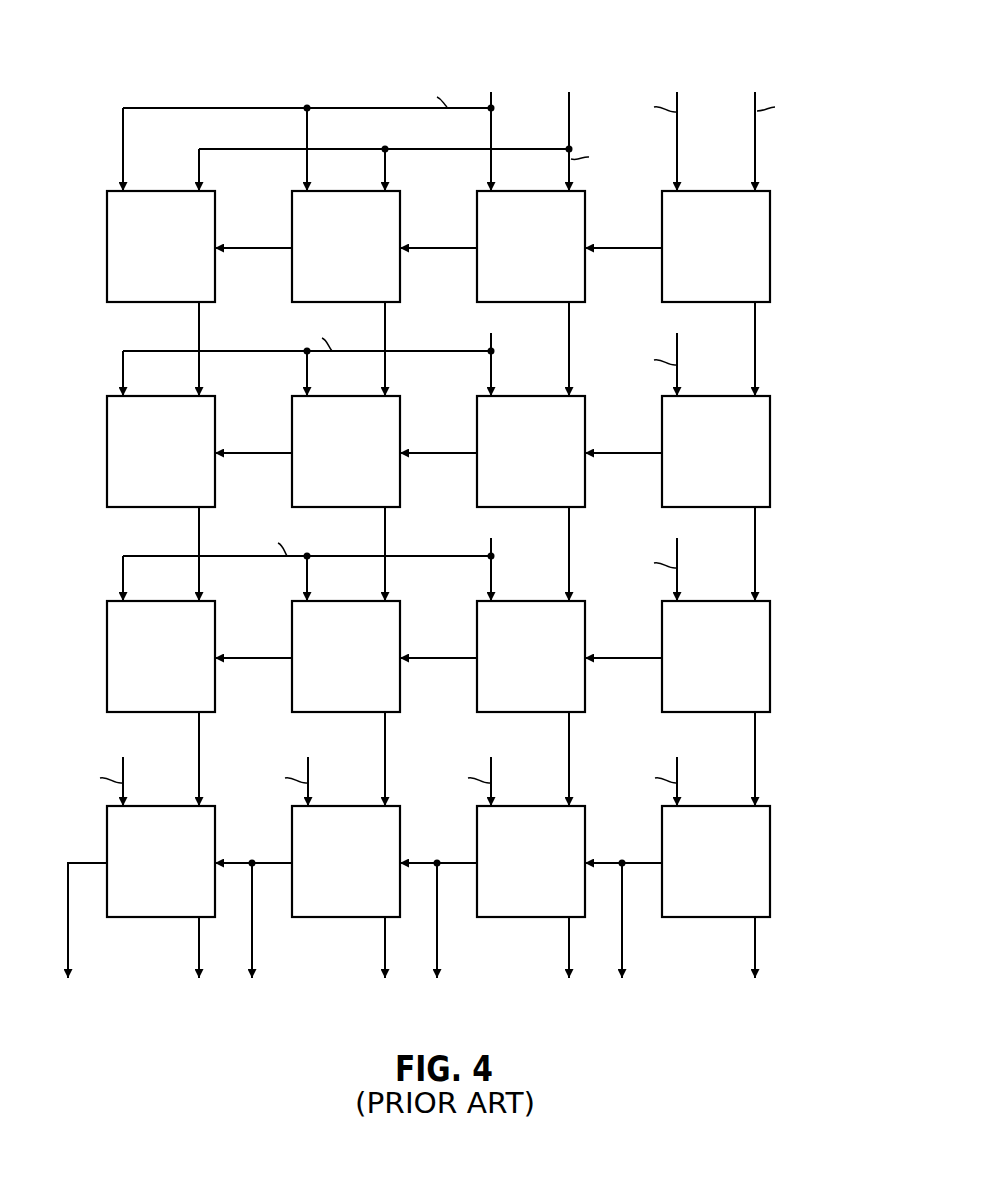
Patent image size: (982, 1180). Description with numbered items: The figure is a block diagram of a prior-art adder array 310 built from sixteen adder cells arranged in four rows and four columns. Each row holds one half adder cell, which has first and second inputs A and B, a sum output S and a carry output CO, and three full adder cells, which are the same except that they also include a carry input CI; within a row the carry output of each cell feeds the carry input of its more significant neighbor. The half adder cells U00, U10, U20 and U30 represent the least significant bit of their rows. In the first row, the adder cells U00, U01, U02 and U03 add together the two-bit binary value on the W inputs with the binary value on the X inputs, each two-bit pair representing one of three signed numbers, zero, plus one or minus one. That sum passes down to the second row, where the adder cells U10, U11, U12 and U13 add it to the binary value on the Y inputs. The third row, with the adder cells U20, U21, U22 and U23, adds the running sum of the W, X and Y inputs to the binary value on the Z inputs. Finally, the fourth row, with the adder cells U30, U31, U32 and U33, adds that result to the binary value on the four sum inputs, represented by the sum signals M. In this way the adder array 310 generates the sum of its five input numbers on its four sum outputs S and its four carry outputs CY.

The adder array 310 is at (150, 30).
The adder cell U00 is at (716, 246).
The adder cell U01 is at (531, 246).
The adder cell U02 is at (346, 246).
The adder cell U03 is at (161, 246).
The adder cell U10 is at (716, 451).
The adder cell U11 is at (531, 451).
The adder cell U12 is at (346, 451).
The adder cell U13 is at (161, 451).
The adder cell U20 is at (716, 656).
The adder cell U21 is at (531, 656).
The adder cell U22 is at (346, 656).
The adder cell U23 is at (161, 656).
The adder cell U30 is at (716, 861).
The adder cell U31 is at (531, 861).
The adder cell U32 is at (346, 861).
The adder cell U33 is at (161, 861).